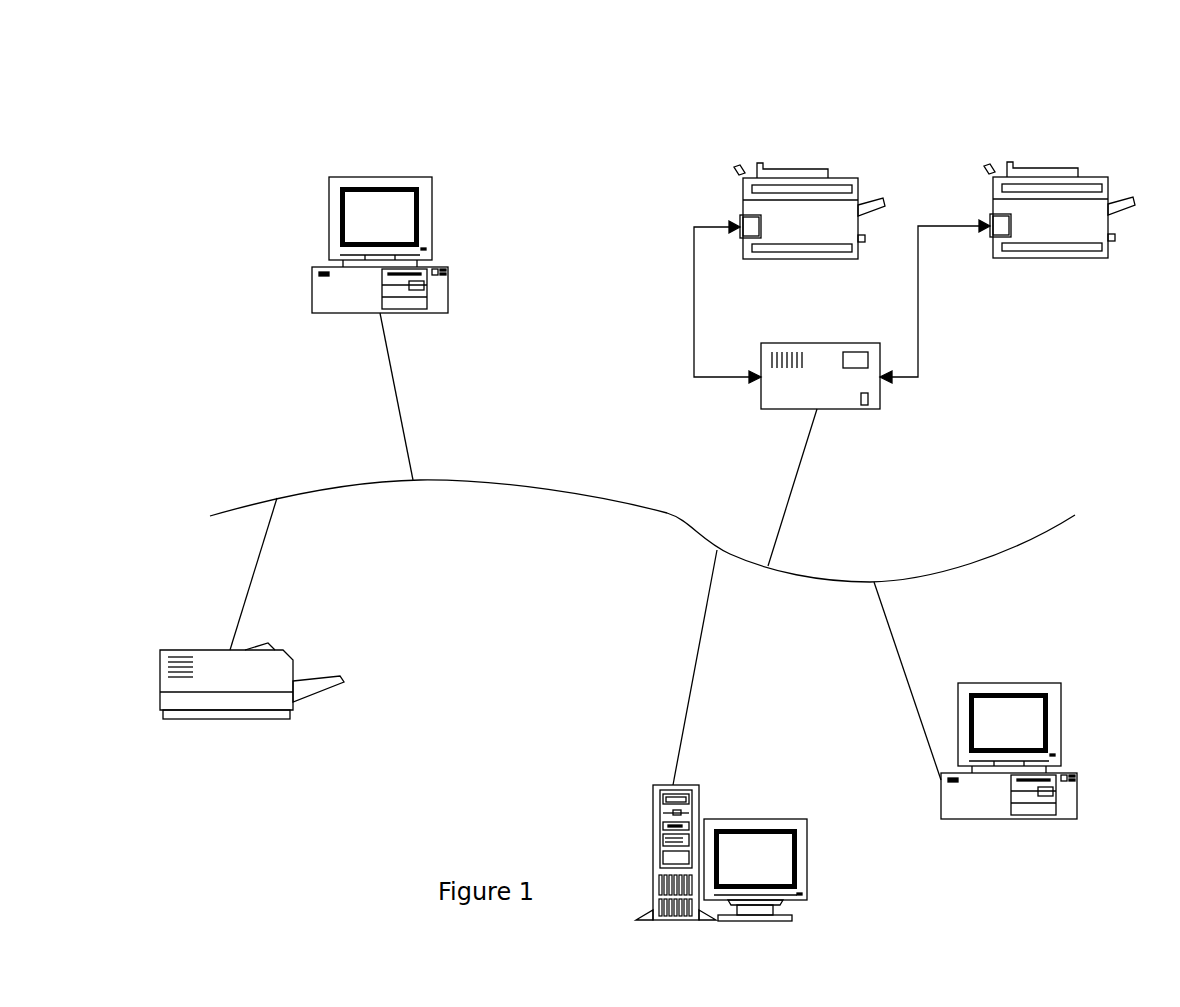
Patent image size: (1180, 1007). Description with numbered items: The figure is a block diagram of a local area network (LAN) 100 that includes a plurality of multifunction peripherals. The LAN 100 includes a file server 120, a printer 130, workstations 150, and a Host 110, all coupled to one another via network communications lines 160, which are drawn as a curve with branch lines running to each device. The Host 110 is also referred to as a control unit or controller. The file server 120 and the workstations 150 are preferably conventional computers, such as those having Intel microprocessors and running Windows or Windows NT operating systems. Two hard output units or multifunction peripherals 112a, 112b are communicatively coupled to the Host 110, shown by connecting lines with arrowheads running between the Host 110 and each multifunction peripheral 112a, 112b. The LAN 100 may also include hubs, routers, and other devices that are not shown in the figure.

The local area network (LAN) 100 is at (237, 433).
The Host 110 is at (818, 343).
The multifunction peripheral 112a is at (812, 163).
The multifunction peripheral 112b is at (1060, 162).
The file server 120 is at (755, 819).
The printer 130 is at (226, 719).
The workstations 150 is at (379, 177).
The network communications lines 160 is at (582, 503).